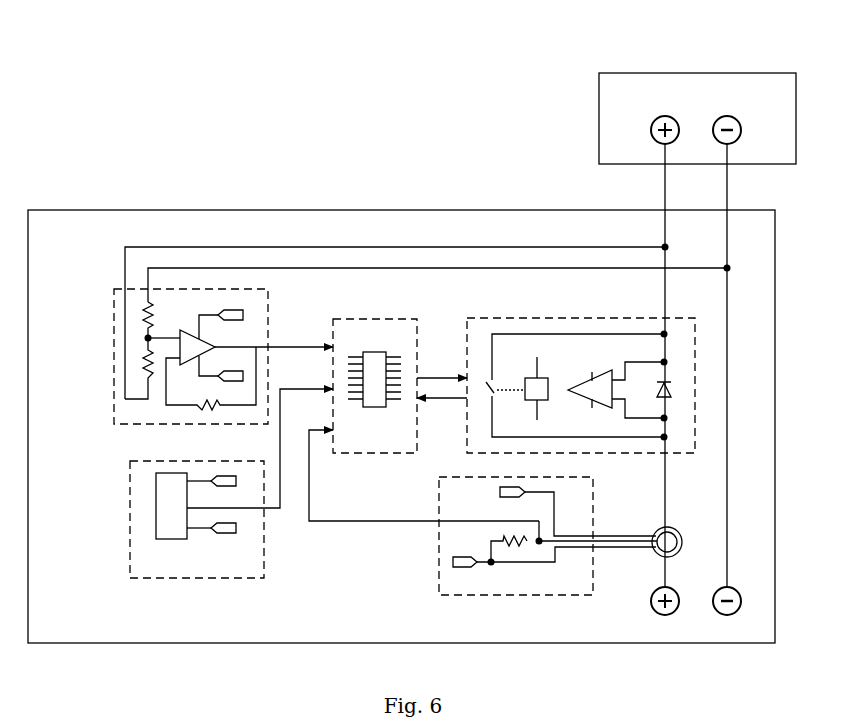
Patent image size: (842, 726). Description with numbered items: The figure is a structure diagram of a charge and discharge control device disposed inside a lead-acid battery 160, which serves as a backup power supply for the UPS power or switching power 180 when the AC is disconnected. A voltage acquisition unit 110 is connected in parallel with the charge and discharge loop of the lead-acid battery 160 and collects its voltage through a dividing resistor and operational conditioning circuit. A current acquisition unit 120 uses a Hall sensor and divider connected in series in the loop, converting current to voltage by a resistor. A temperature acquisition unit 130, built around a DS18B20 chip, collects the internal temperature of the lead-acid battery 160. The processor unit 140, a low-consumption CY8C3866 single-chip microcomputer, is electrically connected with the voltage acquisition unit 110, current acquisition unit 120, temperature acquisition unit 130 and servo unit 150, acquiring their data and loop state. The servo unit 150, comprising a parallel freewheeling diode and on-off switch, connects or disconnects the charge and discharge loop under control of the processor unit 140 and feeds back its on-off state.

The voltage acquisition unit 110 is at (114, 334).
The current acquisition unit 120 is at (439, 567).
The temperature acquisition unit 130 is at (130, 502).
The processor unit 140 is at (400, 319).
The servo unit 150 is at (494, 318).
The lead-acid battery 160 is at (522, 210).
The UPS power or switching power 180 is at (599, 100).